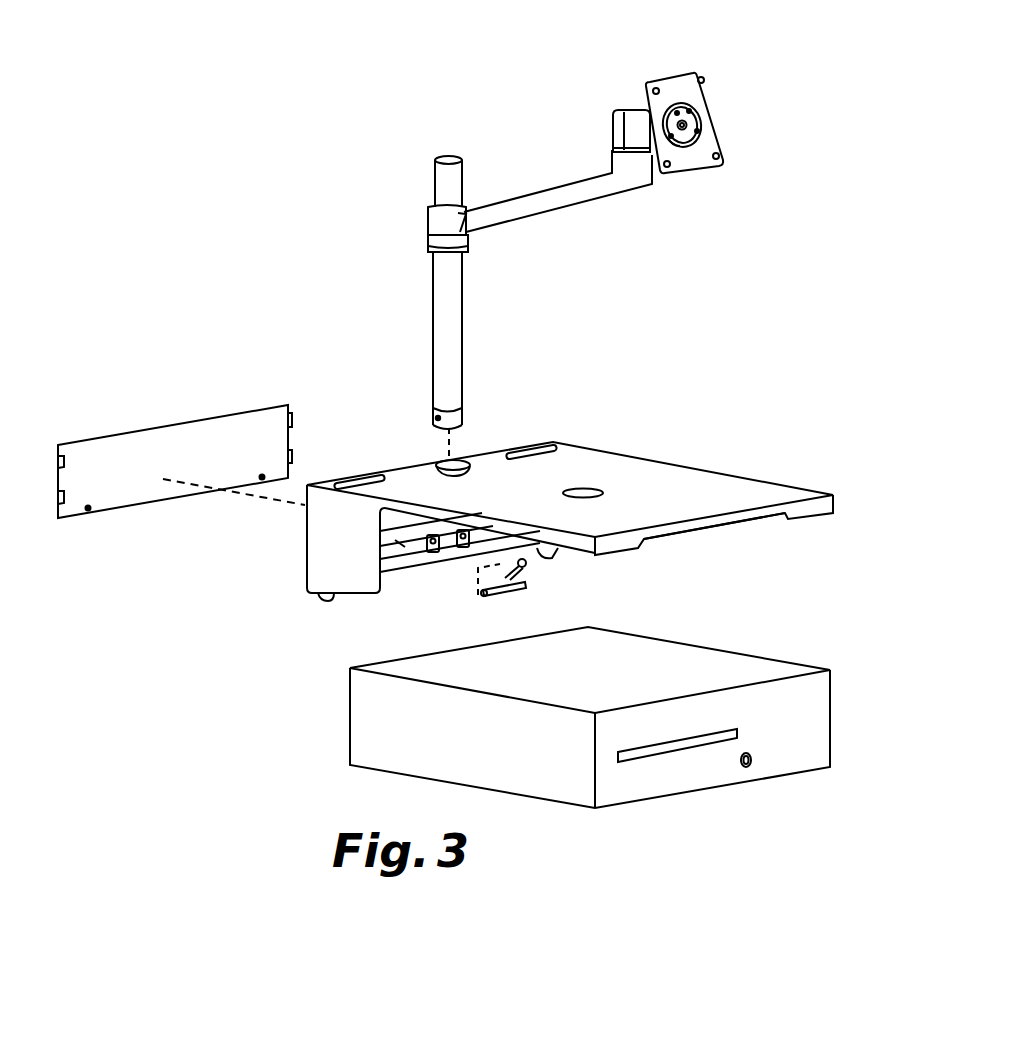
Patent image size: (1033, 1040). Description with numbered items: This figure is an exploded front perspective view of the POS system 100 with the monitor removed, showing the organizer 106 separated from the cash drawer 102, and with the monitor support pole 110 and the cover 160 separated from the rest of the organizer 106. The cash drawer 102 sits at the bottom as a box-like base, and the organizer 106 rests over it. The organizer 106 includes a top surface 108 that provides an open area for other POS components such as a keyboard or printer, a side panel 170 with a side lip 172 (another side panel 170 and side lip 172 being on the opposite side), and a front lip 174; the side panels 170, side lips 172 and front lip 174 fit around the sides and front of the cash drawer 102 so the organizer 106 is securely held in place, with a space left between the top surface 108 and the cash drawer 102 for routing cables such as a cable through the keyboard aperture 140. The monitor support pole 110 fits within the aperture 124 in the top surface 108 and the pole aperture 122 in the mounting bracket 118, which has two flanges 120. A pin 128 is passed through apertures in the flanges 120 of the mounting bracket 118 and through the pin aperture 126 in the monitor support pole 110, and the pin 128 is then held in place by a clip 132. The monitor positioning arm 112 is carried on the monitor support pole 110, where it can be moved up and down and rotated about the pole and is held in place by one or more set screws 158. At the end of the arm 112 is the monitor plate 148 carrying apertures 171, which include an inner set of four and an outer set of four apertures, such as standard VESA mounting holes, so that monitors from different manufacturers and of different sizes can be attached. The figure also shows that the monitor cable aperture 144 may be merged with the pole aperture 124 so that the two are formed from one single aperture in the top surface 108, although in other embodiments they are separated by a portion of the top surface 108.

The POS system 100 is at (145, 128).
The cash drawer 102 is at (770, 672).
The organizer 106 is at (760, 478).
The top surface 108 is at (663, 481).
The monitor support pole 110 is at (447, 357).
The monitor positioning arm 112 is at (522, 190).
The mounting bracket 118 is at (400, 545).
The flanges 120 is at (463, 548).
The pole aperture 122 is at (440, 532).
The aperture 124 is at (440, 462).
The pin aperture 126 is at (434, 418).
The pin 128 is at (509, 591).
The clip 132 is at (527, 566).
The keyboard aperture 140 is at (582, 490).
The monitor cable aperture 144 is at (494, 458).
The monitor plate 148 is at (668, 78).
The set screws 158 is at (430, 213).
The cover 160 is at (148, 432).
The side panel 170 is at (318, 565).
The apertures 171 is at (658, 95).
The side lip 172 is at (576, 545).
The front lip 174 is at (726, 521).